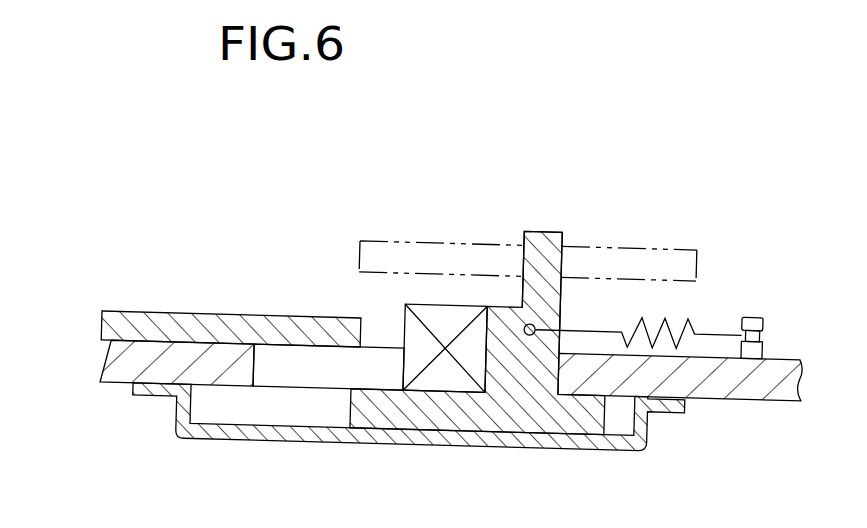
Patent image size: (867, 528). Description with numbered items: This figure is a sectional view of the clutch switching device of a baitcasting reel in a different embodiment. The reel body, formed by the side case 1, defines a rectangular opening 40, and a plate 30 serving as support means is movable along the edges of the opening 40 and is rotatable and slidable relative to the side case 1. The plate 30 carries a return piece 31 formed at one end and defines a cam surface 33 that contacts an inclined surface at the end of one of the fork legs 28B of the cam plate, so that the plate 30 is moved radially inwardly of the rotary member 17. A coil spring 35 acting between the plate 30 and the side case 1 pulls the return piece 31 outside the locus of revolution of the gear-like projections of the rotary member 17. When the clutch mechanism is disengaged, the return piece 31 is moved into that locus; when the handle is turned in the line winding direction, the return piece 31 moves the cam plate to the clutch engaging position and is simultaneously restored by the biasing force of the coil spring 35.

The side case 1 is at (786, 363).
The rotary member 17 is at (642, 250).
The fork legs 28B is at (178, 313).
The plate 30 is at (413, 418).
The return piece 31 is at (548, 238).
The cam surface 33 is at (436, 313).
The coil spring 35 is at (665, 320).
The rectangular opening 40 is at (257, 368).